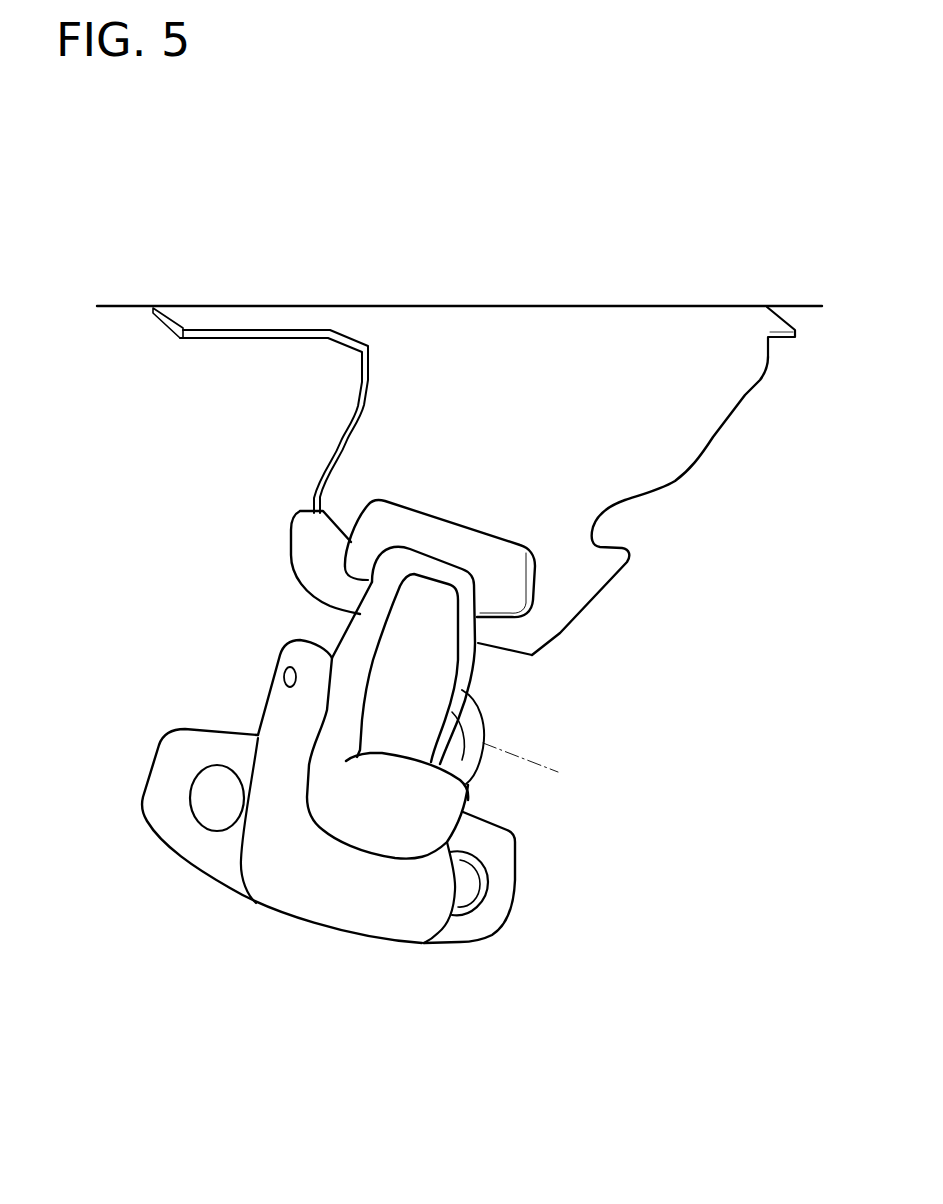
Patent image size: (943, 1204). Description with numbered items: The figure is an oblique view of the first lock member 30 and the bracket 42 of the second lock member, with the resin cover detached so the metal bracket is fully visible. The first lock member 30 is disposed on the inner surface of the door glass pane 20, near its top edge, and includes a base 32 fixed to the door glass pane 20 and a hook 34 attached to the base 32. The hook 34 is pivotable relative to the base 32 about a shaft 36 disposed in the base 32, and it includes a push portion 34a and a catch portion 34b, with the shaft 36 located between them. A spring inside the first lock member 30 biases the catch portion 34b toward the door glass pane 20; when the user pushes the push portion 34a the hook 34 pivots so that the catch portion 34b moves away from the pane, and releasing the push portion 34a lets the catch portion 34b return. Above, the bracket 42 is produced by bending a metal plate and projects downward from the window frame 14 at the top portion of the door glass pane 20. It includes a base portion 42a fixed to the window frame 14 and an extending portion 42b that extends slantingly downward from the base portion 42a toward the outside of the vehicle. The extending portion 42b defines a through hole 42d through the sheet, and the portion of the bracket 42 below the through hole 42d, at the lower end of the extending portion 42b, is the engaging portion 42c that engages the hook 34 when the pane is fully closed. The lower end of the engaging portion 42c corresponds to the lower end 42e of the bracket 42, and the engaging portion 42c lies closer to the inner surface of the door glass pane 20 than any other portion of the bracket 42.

The window frame 14 is at (255, 286).
The door glass pane 20 is at (117, 680).
The first lock member 30 is at (270, 943).
The base 32 is at (172, 776).
The hook 34 is at (427, 675).
The push portion 34a is at (427, 793).
The catch portion 34b is at (383, 560).
The shaft 36 is at (277, 672).
The bracket 42 is at (492, 290).
The base portion 42a is at (690, 320).
The extending portion 42b is at (568, 437).
The engaging portion 42c is at (498, 632).
The through hole 42d is at (427, 541).
The lower end 42e is at (487, 650).